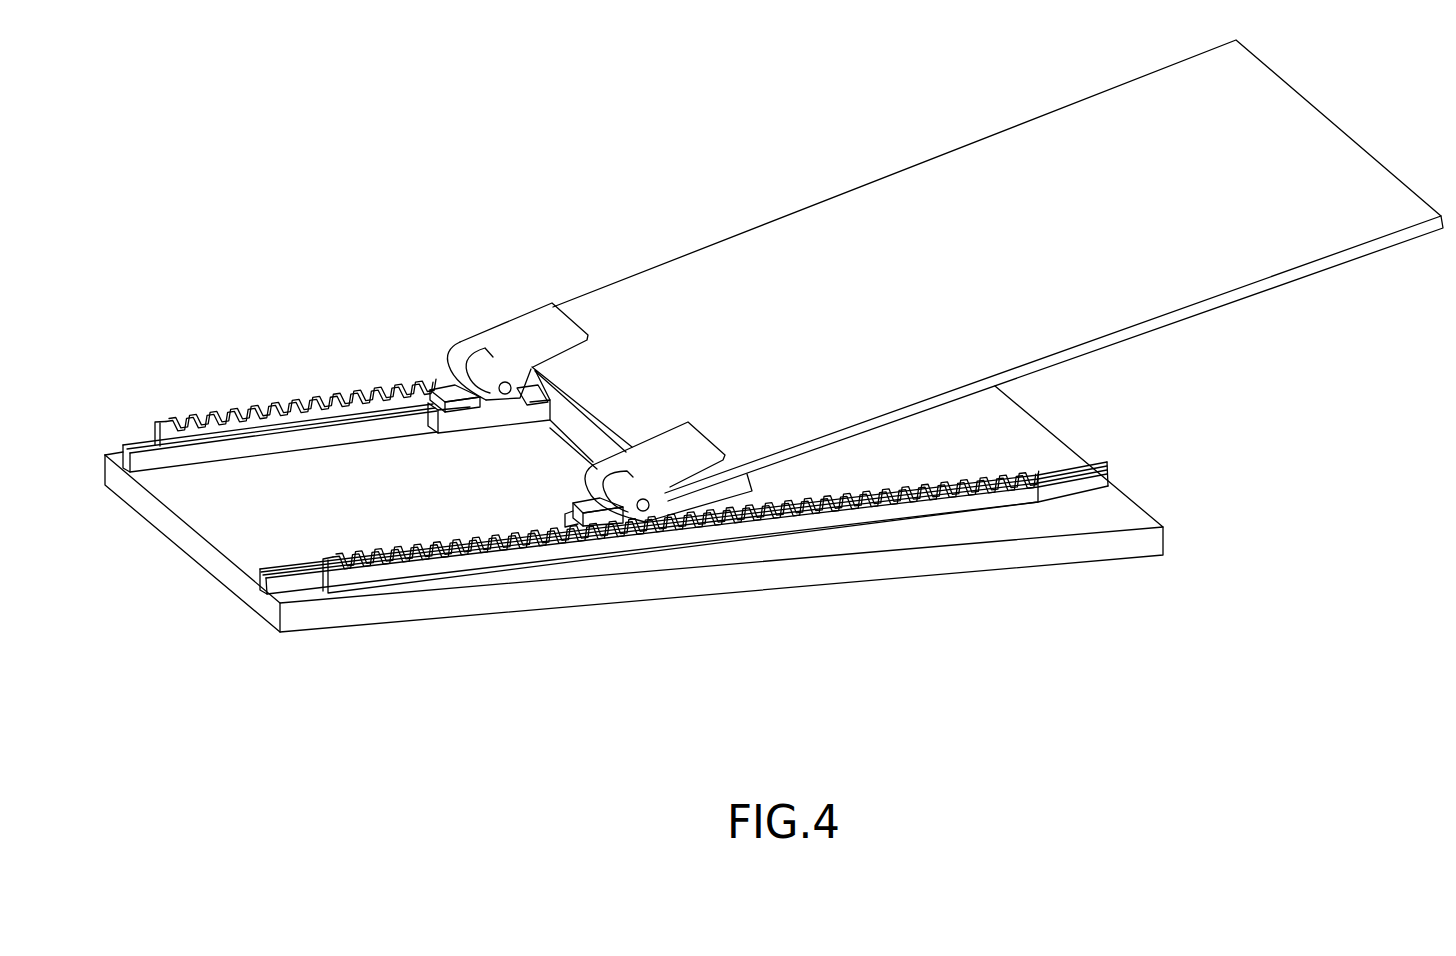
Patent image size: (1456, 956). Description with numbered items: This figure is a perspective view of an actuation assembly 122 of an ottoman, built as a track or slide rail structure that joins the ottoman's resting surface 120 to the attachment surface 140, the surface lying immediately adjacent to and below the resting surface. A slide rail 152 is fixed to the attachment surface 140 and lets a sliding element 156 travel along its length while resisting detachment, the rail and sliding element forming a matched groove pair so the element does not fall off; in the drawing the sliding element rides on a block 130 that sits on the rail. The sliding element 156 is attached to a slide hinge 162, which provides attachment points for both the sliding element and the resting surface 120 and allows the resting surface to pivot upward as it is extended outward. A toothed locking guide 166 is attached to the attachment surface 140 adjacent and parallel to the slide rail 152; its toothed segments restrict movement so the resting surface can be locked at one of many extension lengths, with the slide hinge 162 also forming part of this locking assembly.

The adjustable stand assembly 122 is at (230, 99).
The support plate 120 is at (890, 192).
The slider block 130 is at (465, 417).
The attachment surface 140 is at (612, 597).
The slide rail 152 is at (283, 585).
The sliding element 156 is at (441, 387).
The slide hinge 162 is at (520, 330).
The toothed locking guide 166 is at (161, 424).